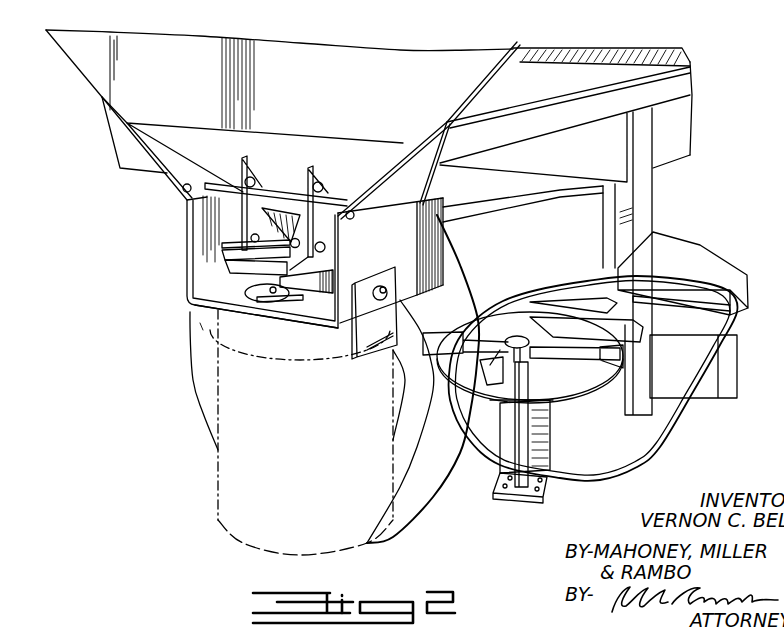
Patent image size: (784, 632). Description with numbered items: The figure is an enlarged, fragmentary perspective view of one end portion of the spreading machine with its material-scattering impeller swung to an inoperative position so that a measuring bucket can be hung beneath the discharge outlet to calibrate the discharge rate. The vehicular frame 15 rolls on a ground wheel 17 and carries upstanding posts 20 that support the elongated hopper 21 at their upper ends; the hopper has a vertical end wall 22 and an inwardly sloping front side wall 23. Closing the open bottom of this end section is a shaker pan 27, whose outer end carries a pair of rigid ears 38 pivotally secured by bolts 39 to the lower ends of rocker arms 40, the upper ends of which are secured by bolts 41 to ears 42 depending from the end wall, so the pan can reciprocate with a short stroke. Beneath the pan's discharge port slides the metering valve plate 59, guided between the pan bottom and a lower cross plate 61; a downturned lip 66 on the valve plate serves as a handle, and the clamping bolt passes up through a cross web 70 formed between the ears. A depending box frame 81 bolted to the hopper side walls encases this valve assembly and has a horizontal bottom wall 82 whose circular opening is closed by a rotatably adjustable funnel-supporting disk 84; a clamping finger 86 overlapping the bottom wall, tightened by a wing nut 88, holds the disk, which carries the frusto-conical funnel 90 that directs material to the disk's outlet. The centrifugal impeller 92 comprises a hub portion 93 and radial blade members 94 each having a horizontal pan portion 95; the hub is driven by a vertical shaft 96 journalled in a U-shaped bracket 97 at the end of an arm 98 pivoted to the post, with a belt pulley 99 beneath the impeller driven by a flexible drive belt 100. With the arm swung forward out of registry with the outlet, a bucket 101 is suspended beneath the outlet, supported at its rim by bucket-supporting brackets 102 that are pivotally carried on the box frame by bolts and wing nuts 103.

The vehicular frame 15 is at (729, 373).
The ground wheel 17 is at (453, 490).
The upstanding post 20 is at (653, 198).
The hopper 21 is at (516, 46).
The end wall 22 is at (324, 47).
The front side wall 23 is at (603, 66).
The shaker pan 27 is at (272, 208).
The ear 38 is at (251, 236).
The bolt 39 is at (325, 245).
The rocker arm 40 is at (242, 215).
The bolt 41 is at (245, 182).
The ear 42 is at (242, 168).
The metering valve plate 59 is at (222, 262).
The lower cross plate 61 is at (333, 268).
The downturned lip 66 is at (232, 278).
The cross web 70 is at (222, 246).
The box frame 81 is at (435, 250).
The bottom wall 82 is at (196, 303).
The funnel-supporting disk 84 is at (262, 302).
The clamping finger 86 is at (272, 302).
The wing nut 88 is at (278, 297).
The funnel 90 is at (334, 283).
The scattering fan or impeller 92 is at (517, 335).
The hub portion 93 is at (528, 350).
The blade member 94 is at (623, 362).
The pan portion 95 is at (583, 397).
The shaft 96 is at (528, 446).
The U-shaped bracket 97 is at (545, 489).
The arm 98 is at (550, 420).
The belt pulley 99 is at (466, 403).
The drive belt 100 is at (699, 402).
The bucket 101 is at (216, 487).
The bucket-supporting bracket 102 is at (203, 318).
The bolt and wing nut 103 is at (380, 304).